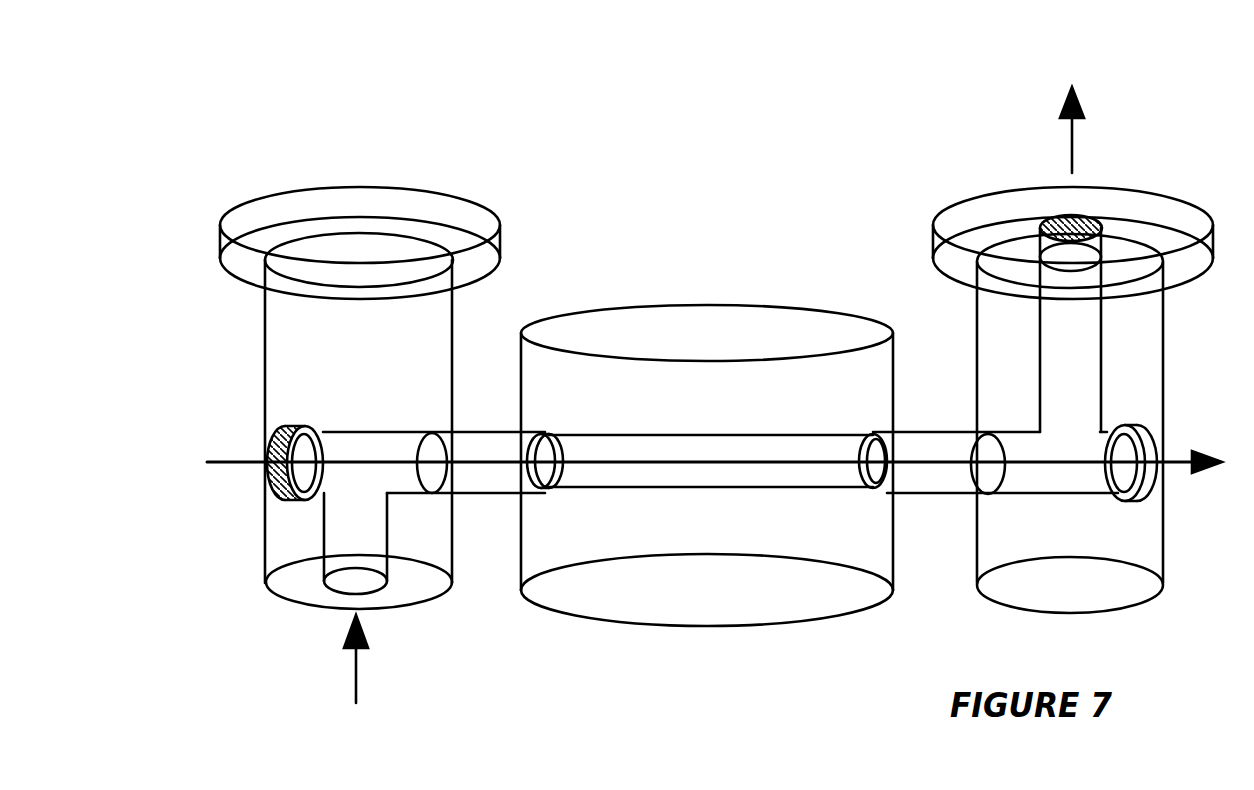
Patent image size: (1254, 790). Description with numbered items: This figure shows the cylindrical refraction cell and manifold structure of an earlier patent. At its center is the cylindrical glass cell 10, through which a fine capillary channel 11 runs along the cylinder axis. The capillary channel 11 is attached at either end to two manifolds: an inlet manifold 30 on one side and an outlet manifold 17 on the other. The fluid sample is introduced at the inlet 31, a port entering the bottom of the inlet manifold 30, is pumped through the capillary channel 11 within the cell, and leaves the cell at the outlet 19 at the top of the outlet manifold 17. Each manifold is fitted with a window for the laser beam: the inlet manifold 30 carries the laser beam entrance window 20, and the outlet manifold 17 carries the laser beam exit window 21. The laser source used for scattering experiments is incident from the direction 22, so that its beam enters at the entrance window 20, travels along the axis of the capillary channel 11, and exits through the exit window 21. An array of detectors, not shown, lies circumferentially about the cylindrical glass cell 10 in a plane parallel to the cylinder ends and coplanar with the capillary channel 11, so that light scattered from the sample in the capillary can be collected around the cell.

The cylindrical glass cell 10 is at (688, 325).
The fine capillary channel 11 is at (743, 475).
The outlet manifold 17 is at (1122, 205).
The fluid sample outlet 19 is at (1073, 110).
The laser beam entrance window 20 is at (312, 430).
The laser beam exit window 21 is at (1124, 470).
The laser source incidence direction 22 is at (688, 411).
The inlet manifold 30 is at (408, 208).
The fluid sample inlet 31 is at (350, 678).